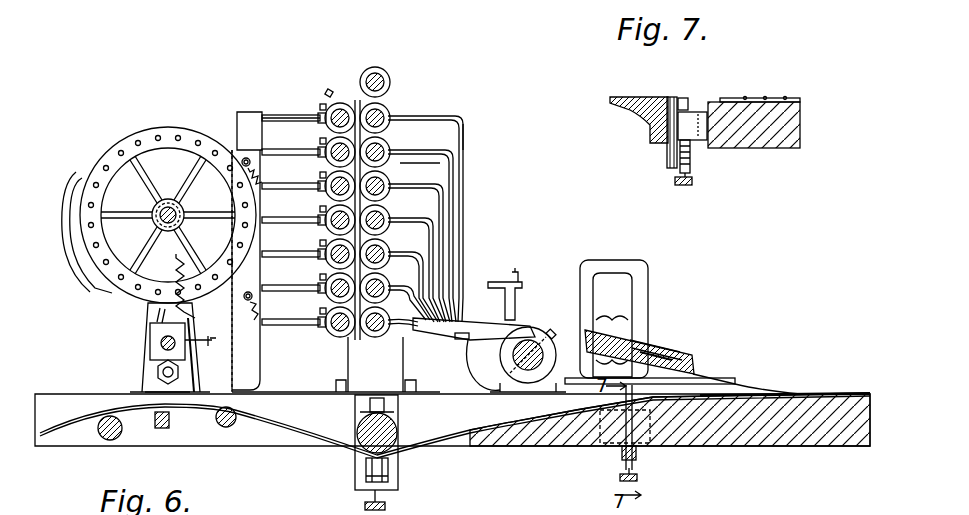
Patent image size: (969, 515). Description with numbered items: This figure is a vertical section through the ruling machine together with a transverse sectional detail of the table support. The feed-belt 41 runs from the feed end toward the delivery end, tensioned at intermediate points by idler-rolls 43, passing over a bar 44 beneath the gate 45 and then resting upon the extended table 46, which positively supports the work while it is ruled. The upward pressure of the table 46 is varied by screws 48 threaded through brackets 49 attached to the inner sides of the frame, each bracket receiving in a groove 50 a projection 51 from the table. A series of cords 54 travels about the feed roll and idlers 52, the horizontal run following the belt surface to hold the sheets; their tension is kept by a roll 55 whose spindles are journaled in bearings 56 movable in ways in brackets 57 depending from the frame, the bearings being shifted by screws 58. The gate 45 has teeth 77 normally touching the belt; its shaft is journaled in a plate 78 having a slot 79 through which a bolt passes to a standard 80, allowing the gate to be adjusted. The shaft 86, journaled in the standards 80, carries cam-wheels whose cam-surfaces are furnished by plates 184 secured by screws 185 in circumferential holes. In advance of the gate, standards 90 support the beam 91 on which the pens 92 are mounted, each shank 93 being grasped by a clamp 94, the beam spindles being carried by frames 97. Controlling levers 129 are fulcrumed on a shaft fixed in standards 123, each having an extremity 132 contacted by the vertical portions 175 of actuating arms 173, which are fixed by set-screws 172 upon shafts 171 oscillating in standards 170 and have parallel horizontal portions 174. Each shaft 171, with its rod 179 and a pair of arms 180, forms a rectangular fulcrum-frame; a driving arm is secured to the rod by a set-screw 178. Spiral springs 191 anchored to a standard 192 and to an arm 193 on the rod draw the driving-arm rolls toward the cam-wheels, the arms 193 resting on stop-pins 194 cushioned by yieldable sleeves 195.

In FIG. 6, the feed-belt 41 is at (455, 440).
In FIG. 7, the feed-belt 41 is at (802, 100).
In FIG. 6, the idler-rolls 43 is at (108, 440).
In FIG. 6, the bar 44 is at (164, 430).
In FIG. 6, the gate 45 is at (150, 340).
In FIG. 6, the table 46 is at (782, 448).
In FIG. 7, the table 46 is at (772, 150).
In FIG. 6, the screws 48 is at (640, 478).
In FIG. 7, the screws 48 is at (692, 182).
In FIG. 6, the brackets 49 is at (626, 460).
In FIG. 7, the brackets 49 is at (667, 163).
In FIG. 6, the groove 50 is at (622, 452).
In FIG. 7, the groove 50 is at (680, 97).
In FIG. 6, the projections 51 is at (640, 444).
In FIG. 7, the projections 51 is at (696, 112).
In FIG. 7, the idlers 52 is at (640, 112).
In FIG. 6, the cords 54 is at (833, 392).
In FIG. 7, the cords 54 is at (785, 96).
In FIG. 6, the roll 55 is at (357, 452).
In FIG. 6, the bearings 56 is at (398, 412).
In FIG. 6, the brackets 57 is at (390, 470).
In FIG. 6, the screws 58 is at (365, 506).
In FIG. 6, the teeth 77 is at (197, 360).
In FIG. 6, the plate 78 is at (150, 368).
In FIG. 6, the slot 79 is at (148, 380).
In FIG. 6, the standard 80 is at (145, 313).
In FIG. 6, the shaft 86 is at (168, 198).
In FIG. 6, the standards 90 is at (648, 300).
In FIG. 6, the beam 91 is at (553, 328).
In FIG. 6, the pens 92 is at (742, 385).
In FIG. 6, the shank 93 is at (694, 352).
In FIG. 6, the clamp 94 is at (660, 350).
In FIG. 6, the frames 97 is at (630, 330).
In FIG. 6, the standards 123 is at (478, 385).
In FIG. 6, the controlling levers 129 is at (540, 328).
In FIG. 6, the extremity 132 is at (472, 318).
In FIG. 6, the standards 170 is at (470, 341).
In FIG. 6, the shafts 171 is at (390, 112).
In FIG. 6, the set-screws 172 is at (392, 88).
In FIG. 6, the actuating arms 173 is at (462, 150).
In FIG. 6, the horizontal portions 174 is at (435, 168).
In FIG. 6, the vertical portions 175 is at (466, 190).
In FIG. 6, the set-screw 178 is at (330, 90).
In FIG. 6, the rod 179 is at (330, 262).
In FIG. 6, the arms 180 is at (372, 340).
In FIG. 6, the plates 184 is at (65, 215).
In FIG. 6, the screws 185 is at (78, 196).
In FIG. 6, the spiral springs 191 is at (262, 158).
In FIG. 6, the standard 192 is at (256, 375).
In FIG. 6, the arm 193 is at (295, 150).
In FIG. 6, the stop-pins 194 is at (200, 320).
In FIG. 6, the sleeves 195 is at (247, 155).